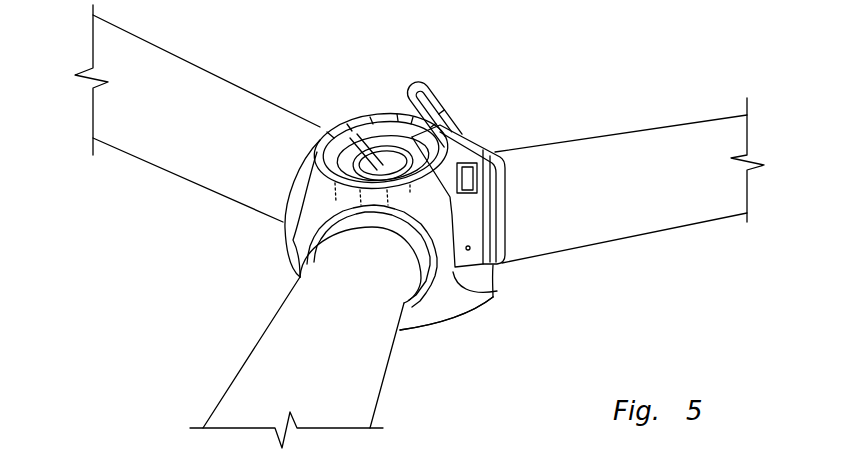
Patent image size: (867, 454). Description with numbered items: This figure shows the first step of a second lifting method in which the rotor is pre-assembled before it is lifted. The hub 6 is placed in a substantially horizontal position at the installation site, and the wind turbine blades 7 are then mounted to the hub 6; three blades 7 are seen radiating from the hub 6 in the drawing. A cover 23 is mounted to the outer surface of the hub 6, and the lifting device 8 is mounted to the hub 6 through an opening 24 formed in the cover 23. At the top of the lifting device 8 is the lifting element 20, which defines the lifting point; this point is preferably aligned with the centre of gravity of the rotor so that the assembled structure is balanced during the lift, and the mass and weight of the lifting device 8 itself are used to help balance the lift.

The hub 6 is at (338, 210).
The wind turbine blades 7 is at (200, 126).
The lifting device 8 is at (488, 133).
The lifting element 20 is at (430, 80).
The cover 23 is at (474, 304).
The opening 24 is at (453, 272).